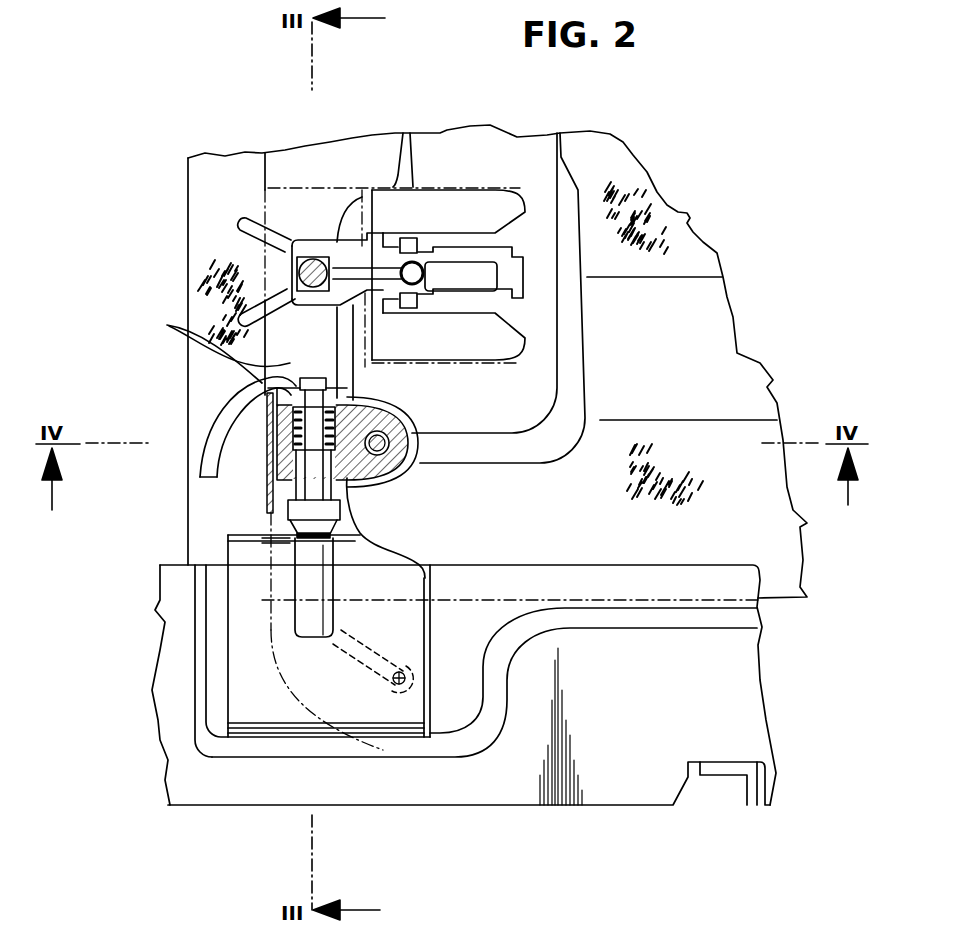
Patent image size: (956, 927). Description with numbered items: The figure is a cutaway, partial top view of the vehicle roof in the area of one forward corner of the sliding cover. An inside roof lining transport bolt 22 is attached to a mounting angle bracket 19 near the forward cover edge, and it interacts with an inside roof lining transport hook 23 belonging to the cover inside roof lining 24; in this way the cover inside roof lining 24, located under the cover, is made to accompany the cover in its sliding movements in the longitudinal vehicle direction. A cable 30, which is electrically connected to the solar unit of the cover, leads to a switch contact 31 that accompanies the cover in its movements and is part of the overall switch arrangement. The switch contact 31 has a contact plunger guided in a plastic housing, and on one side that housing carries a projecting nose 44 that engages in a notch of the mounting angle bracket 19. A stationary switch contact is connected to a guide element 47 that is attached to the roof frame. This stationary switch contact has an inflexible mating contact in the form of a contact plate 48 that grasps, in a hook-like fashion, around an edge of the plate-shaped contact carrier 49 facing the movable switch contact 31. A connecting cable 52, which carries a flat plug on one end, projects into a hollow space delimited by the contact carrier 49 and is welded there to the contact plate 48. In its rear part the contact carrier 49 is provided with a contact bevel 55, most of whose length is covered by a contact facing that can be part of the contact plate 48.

The mounting angle bracket 19 is at (211, 350).
The inside roof lining transport bolt 22 is at (313, 258).
The inside roof lining transport hook 23 is at (240, 224).
The cover inside roof lining 24 is at (693, 330).
The cable 30 is at (222, 418).
The switch contact 31 is at (254, 487).
The projecting nose 44 is at (267, 440).
The guide element 47 is at (503, 763).
The contact plate 48 is at (313, 579).
The contact carrier 49 is at (260, 703).
The connecting cable 52 is at (372, 680).
The contact bevel 55 is at (388, 548).